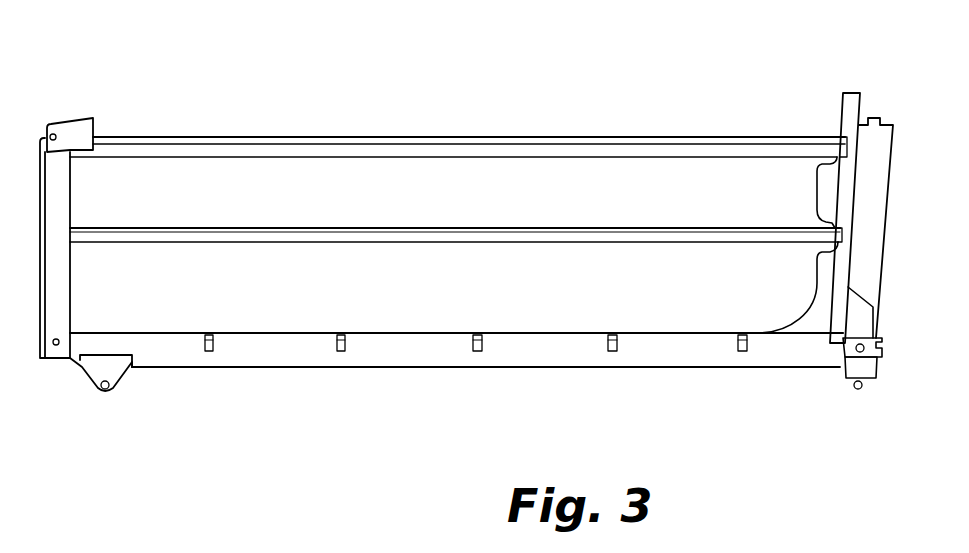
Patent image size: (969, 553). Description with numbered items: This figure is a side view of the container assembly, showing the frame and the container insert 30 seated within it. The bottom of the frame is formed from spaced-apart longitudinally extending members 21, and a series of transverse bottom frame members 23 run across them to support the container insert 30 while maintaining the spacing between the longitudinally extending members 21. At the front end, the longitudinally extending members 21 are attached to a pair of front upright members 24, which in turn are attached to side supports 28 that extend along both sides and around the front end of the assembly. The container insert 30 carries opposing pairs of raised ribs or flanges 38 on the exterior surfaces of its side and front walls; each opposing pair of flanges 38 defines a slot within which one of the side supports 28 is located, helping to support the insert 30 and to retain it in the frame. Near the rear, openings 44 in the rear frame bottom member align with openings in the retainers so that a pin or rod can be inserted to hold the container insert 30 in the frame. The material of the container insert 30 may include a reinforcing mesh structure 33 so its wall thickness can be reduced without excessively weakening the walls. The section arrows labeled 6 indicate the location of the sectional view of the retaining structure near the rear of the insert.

The section line 6- 6 is at (194, 103).
The longitudinally extending members 21 is at (400, 355).
The transverse bottom frame members 23 is at (340, 351).
The front upright members 24 is at (855, 92).
The side supports 28 is at (523, 150).
The container insert 30 is at (667, 307).
The reinforcing mesh structure 33 is at (748, 343).
The raised ribs or flanges 38 is at (362, 167).
The openings 44 is at (57, 345).